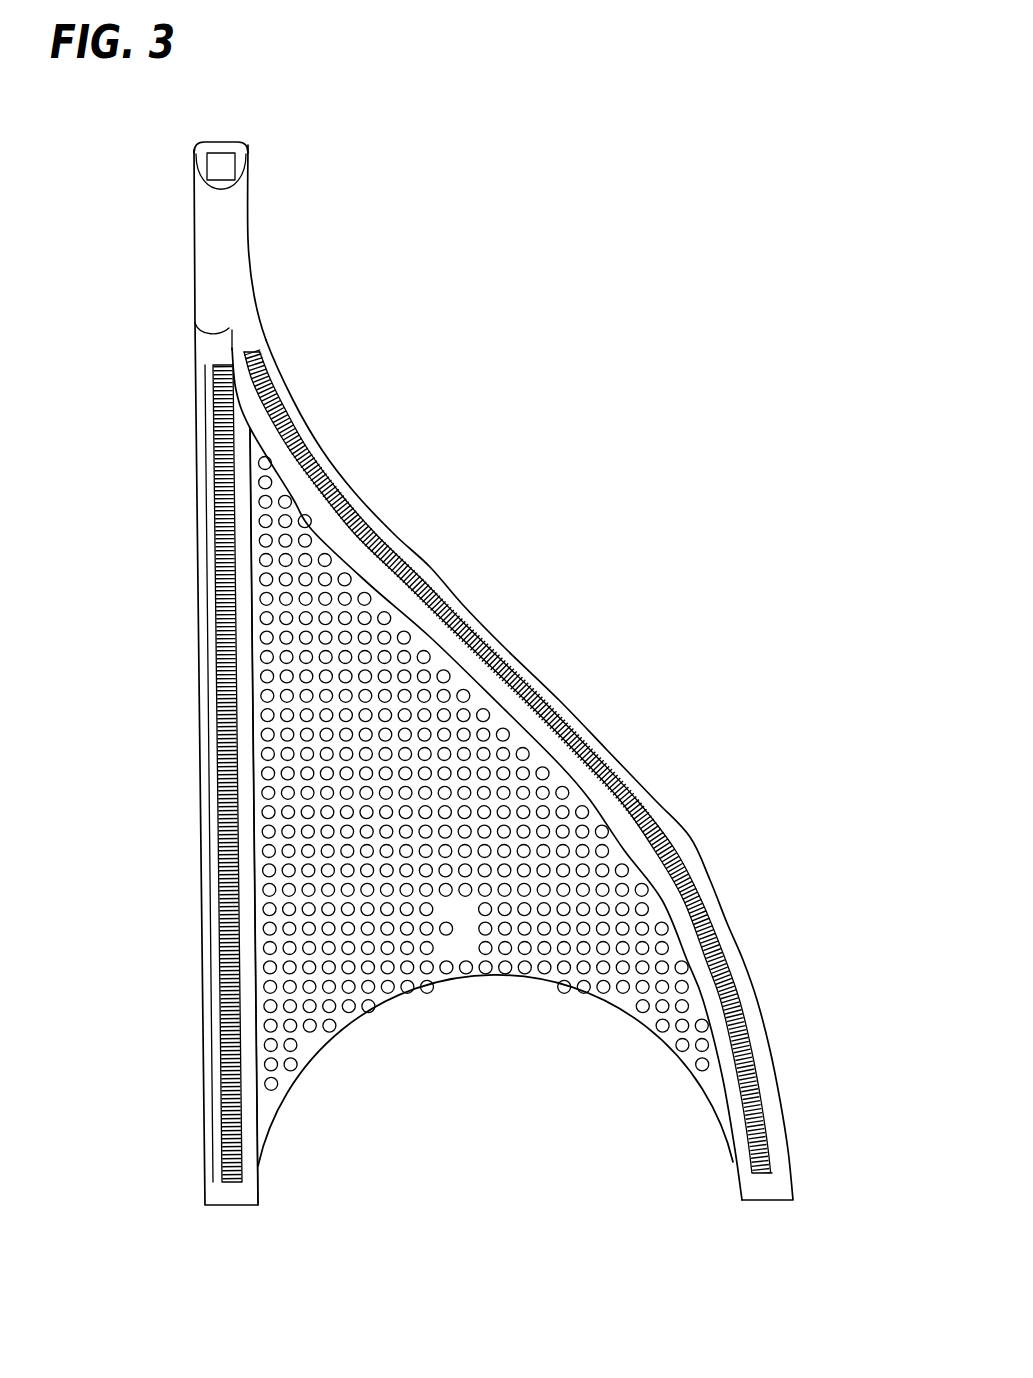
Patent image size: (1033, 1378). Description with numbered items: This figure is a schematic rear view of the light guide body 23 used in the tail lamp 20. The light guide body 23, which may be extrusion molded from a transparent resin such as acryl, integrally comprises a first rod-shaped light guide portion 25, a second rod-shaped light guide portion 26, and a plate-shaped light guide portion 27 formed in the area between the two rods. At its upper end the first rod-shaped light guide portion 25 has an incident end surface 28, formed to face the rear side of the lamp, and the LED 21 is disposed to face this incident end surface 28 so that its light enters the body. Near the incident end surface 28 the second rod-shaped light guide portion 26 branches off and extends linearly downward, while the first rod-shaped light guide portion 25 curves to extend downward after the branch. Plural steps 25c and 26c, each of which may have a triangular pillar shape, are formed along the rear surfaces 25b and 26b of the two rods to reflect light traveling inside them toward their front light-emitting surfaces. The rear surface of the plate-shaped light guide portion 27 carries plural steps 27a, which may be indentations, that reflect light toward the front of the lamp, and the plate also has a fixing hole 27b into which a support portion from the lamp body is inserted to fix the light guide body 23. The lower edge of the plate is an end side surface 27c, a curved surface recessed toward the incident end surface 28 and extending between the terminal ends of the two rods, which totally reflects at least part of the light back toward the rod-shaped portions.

The tail lamp 20 is at (425, 400).
The LED 21 is at (220, 170).
The light guide body 23 is at (260, 259).
The first rod-shaped light guide portion 25 is at (418, 544).
The rear surface of the first rod-shaped light guide portion 25b is at (457, 607).
The steps 25c is at (660, 800).
The second rod-shaped light guide portion 26 is at (200, 650).
The rear surface of the second rod-shaped light guide portion 26b is at (213, 573).
The steps 26c is at (218, 848).
The plate-shaped light guide portion 27 is at (402, 695).
The steps 27a is at (603, 868).
The fixing hole 27b is at (437, 927).
The end side surface 27c is at (455, 985).
The incident end surface 28 is at (205, 160).